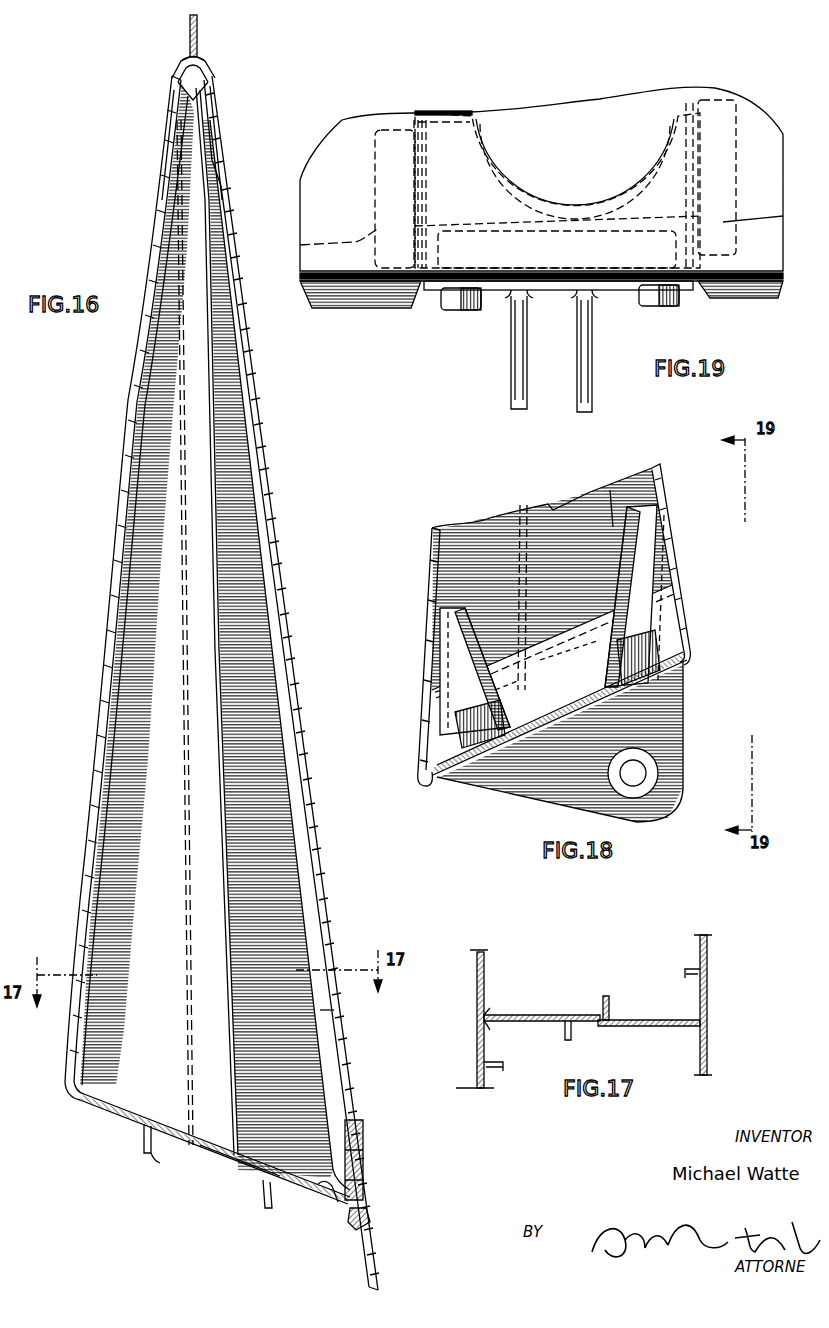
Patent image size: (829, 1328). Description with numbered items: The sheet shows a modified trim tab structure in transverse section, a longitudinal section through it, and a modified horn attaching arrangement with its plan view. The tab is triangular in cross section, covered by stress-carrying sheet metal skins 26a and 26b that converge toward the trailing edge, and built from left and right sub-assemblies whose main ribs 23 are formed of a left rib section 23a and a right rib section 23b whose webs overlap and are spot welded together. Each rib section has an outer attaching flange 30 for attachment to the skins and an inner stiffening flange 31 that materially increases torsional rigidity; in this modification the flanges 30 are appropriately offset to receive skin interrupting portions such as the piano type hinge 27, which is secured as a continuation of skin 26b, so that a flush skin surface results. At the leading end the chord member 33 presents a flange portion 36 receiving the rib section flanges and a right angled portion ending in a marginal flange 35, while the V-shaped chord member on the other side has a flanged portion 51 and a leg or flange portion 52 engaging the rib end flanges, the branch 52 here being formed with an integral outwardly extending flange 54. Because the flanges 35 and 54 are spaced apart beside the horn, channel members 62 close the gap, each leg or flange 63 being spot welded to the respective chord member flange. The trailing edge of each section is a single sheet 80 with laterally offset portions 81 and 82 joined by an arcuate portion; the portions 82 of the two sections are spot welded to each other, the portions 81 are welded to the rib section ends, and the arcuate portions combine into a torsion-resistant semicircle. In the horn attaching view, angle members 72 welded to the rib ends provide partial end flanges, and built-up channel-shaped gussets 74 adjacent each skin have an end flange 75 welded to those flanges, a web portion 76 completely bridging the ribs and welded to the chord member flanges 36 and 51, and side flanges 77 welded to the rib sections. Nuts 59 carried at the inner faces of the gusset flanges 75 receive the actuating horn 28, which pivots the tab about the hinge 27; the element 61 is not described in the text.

In FIG. 16, the laterally offset portion 82 is at (205, 42).
In FIG. 16, the single sheet 80 is at (176, 67).
In FIG. 16, the laterally offset portion 81 is at (178, 104).
In FIG. 16, the skin 26a is at (110, 576).
In FIG. 18, the skin 26a is at (661, 490).
In FIG. 17, the skin 26a is at (477, 997).
In FIG. 16, the skin 26b is at (268, 478).
In FIG. 19, the skin 26b is at (590, 114).
In FIG. 18, the skin 26b is at (430, 550).
In FIG. 17, the skin 26b is at (708, 966).
In FIG. 16, the stiffening flange 31 is at (214, 652).
In FIG. 16, the left rib section 23a is at (178, 803).
In FIG. 17, the left rib section 23a is at (548, 1006).
In FIG. 16, the right rib section 23b is at (283, 865).
In FIG. 17, the right rib section 23b is at (664, 1003).
In FIG. 16, the attaching flange 30 is at (320, 1010).
In FIG. 17, the attaching flange 30 is at (503, 1071).
In FIG. 16, the flange portion 36 is at (78, 1100).
In FIG. 16, the chord member 33 is at (118, 1116).
In FIG. 16, the marginal flange 35 is at (142, 1152).
In FIG. 16, the leg or flange 63 is at (152, 1153).
In FIG. 16, the channel member 62 is at (228, 1166).
In FIG. 16, the outwardly extending flange 54 is at (270, 1208).
In FIG. 16, the leg or flange portion 52 is at (322, 1203).
In FIG. 16, the flanged portion 51 is at (365, 1150).
In FIG. 16, the piano type hinge 27 is at (368, 1218).
In FIG. 19, the built-up channel-shaped gusset 74 is at (524, 192).
In FIG. 18, the built-up channel-shaped gusset 74 is at (445, 658).
In FIG. 19, the nut 59 is at (620, 239).
In FIG. 18, the nut 59 is at (458, 728).
In FIG. 19, the nut 61 is at (449, 308).
In FIG. 19, the actuating horn 28 is at (513, 353).
In FIG. 18, the actuating horn 28 is at (688, 782).
In FIG. 18, the main rib 23 is at (520, 515).
In FIG. 18, the side flange 77 is at (613, 527).
In FIG. 18, the angle member 72 is at (574, 675).
In FIG. 18, the web portion 76 is at (445, 620).
In FIG. 18, the end flange 75 is at (450, 778).